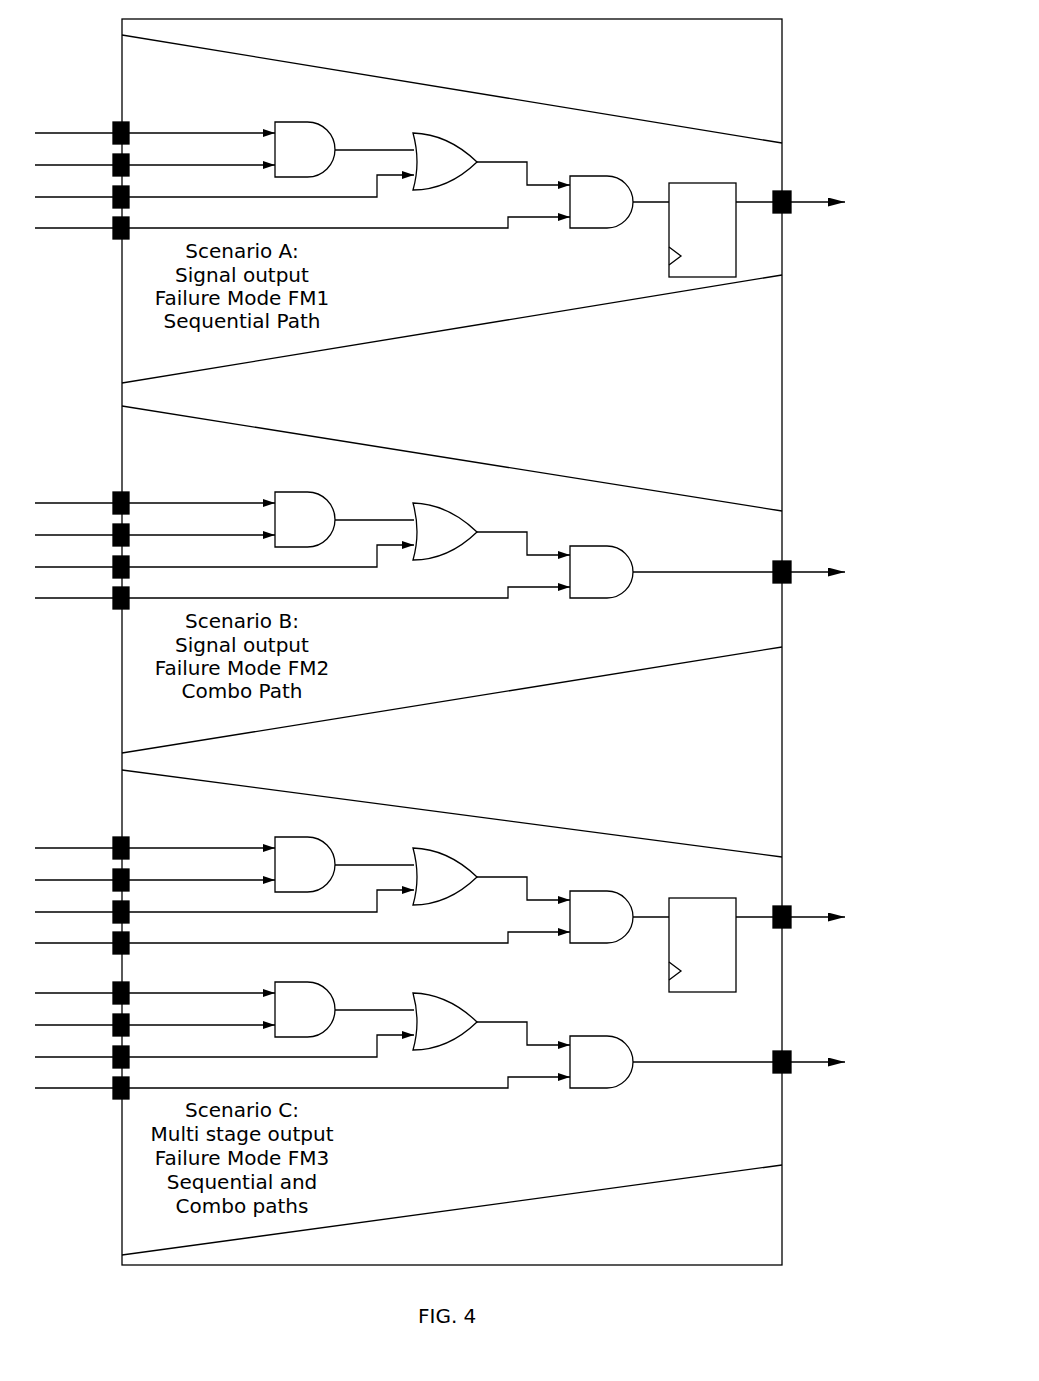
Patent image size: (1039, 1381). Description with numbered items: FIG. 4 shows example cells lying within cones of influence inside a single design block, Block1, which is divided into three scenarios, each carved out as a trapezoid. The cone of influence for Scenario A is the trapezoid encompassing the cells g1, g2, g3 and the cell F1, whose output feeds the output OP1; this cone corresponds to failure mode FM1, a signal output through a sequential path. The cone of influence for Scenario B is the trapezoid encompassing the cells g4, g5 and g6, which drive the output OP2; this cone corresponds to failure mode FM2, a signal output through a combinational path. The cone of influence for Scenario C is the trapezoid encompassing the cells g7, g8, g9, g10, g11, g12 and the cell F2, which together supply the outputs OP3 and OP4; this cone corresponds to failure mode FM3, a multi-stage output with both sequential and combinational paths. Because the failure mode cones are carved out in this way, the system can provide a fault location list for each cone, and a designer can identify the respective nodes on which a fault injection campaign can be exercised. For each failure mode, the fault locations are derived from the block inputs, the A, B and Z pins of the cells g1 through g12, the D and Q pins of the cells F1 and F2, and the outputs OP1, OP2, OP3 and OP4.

The logic block Block1 is at (452, 642).
The cell g1 is at (344, 135).
The cell g2 is at (491, 147).
The cell g3 is at (619, 190).
The cell g4 is at (344, 505).
The cell g5 is at (491, 517).
The cell g6 is at (601, 560).
The cell g7 is at (344, 850).
The cell g8 is at (491, 862).
The cell g9 is at (619, 905).
The cell g10 is at (344, 995).
The cell g11 is at (491, 1007).
The cell g12 is at (601, 1050).
The cell F1 is at (702, 230).
The cell F2 is at (702, 945).
The output OP1 is at (815, 203).
The output OP2 is at (763, 573).
The output OP3 is at (815, 918).
The output OP4 is at (763, 1063).